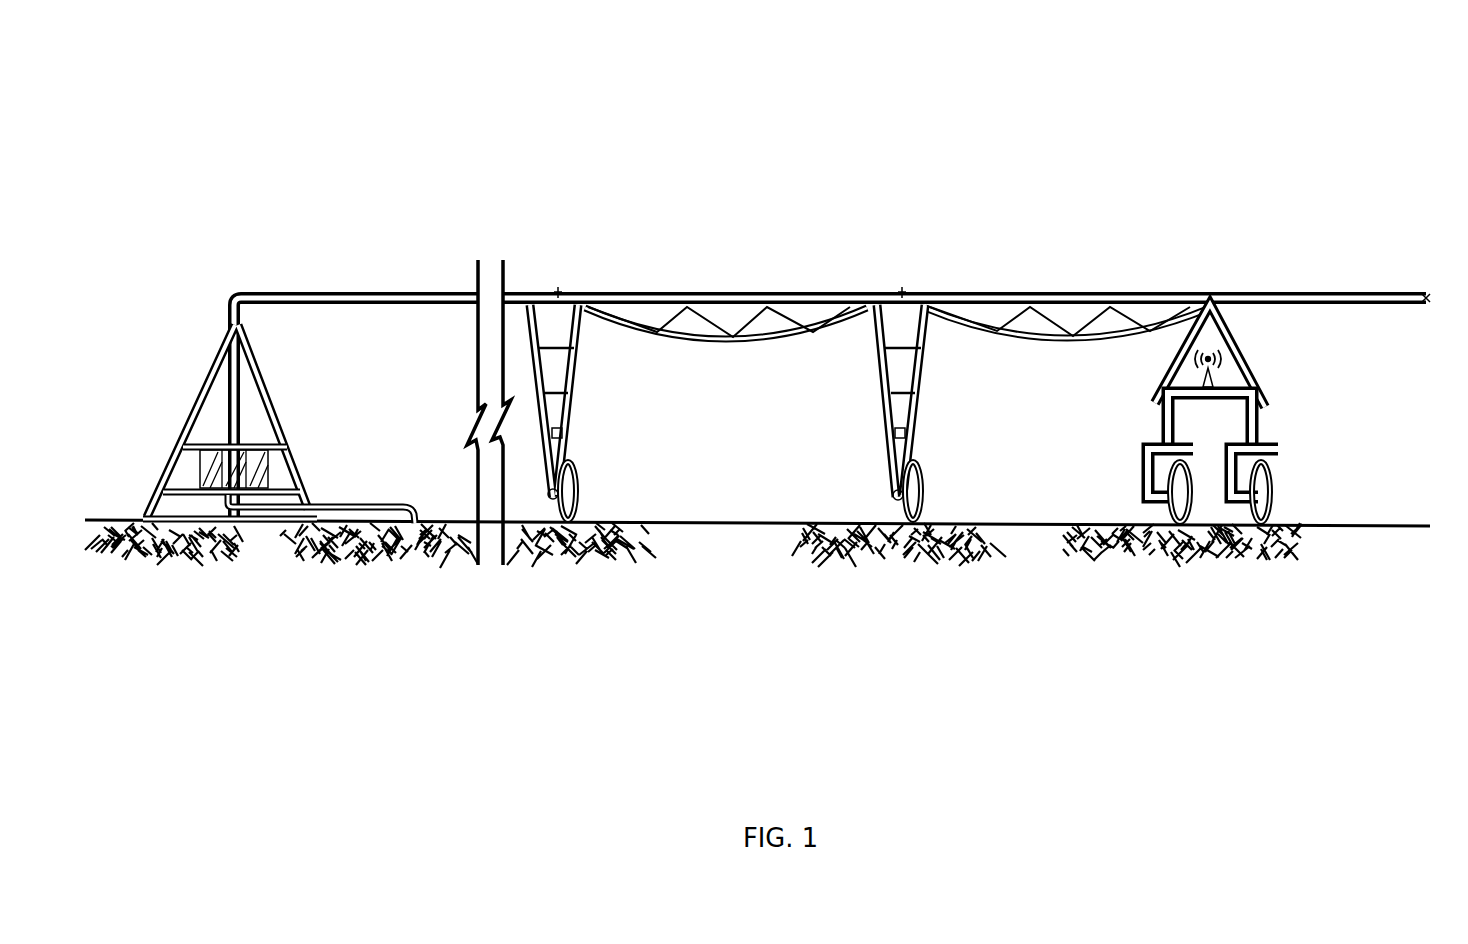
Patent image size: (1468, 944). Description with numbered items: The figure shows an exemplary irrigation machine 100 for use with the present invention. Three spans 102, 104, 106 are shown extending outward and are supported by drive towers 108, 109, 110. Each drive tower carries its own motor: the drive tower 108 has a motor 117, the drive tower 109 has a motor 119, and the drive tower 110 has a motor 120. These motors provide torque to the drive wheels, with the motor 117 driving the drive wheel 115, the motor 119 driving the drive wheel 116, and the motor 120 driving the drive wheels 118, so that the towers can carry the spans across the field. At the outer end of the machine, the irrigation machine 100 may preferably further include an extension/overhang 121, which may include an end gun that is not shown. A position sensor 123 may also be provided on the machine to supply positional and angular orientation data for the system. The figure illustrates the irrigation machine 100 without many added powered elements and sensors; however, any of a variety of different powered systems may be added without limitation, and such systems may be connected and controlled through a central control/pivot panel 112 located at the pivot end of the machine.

The irrigation machine 100 is at (835, 120).
The span 102 is at (295, 295).
The span 104 is at (694, 294).
The span 106 is at (1048, 293).
The drive tower 108 is at (573, 377).
The drive tower 109 is at (922, 348).
The drive tower 110 is at (1258, 387).
The central control/pivot panel 112 is at (215, 465).
The drive wheel 115 is at (578, 493).
The drive wheel 116 is at (922, 492).
The motor 117 is at (568, 433).
The drive wheels 118 is at (1188, 503).
The motor 119 is at (907, 433).
The motor 120 is at (1236, 490).
The extension/overhang 121 is at (1408, 296).
The position sensor 123 is at (1222, 358).